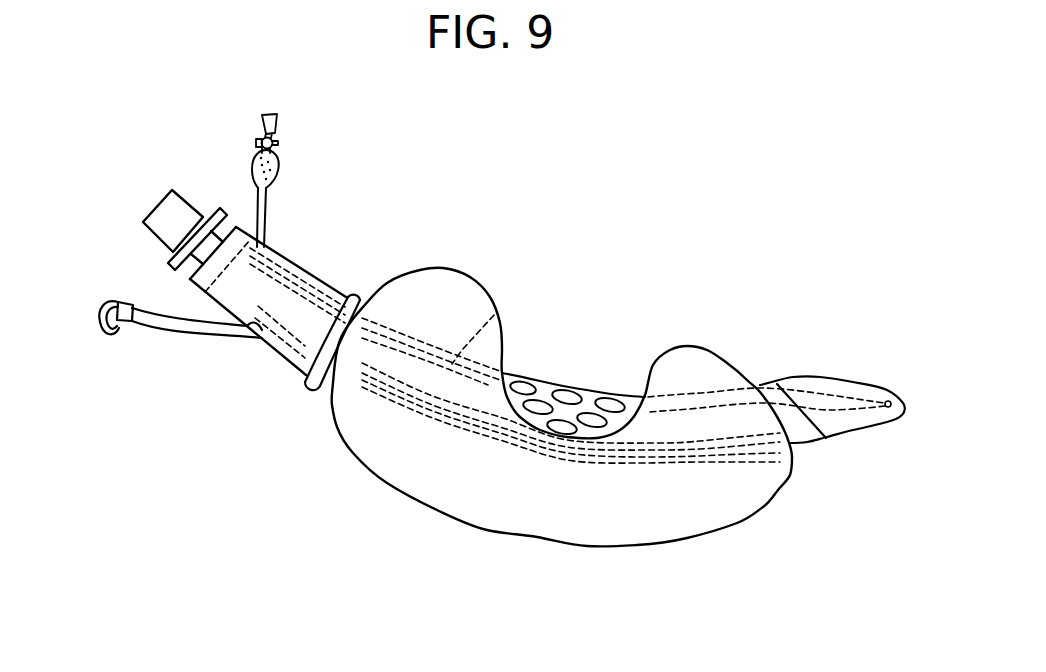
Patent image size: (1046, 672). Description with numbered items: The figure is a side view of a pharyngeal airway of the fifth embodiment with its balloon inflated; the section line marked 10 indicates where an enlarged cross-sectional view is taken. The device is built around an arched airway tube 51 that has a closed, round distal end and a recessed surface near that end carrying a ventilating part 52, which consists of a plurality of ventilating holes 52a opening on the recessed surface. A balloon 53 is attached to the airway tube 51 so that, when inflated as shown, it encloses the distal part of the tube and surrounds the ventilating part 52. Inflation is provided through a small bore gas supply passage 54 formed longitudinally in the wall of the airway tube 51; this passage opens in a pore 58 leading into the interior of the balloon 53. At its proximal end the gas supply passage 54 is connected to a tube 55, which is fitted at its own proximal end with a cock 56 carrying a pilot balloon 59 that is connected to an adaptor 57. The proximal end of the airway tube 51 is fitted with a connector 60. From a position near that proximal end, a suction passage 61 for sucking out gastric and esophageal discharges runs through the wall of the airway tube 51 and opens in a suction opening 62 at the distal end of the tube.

The section line for FIG. 10 is at (670, 343).
The arched airway tube 51 is at (338, 297).
The ventilating part 52 is at (588, 393).
The ventilating holes 52a is at (521, 381).
The balloon 53 is at (496, 517).
The gas supply passage 54 is at (307, 277).
The tube 55 is at (266, 234).
The cock 56 is at (283, 143).
The adaptor 57 is at (279, 121).
The pore 58 is at (494, 314).
The pilot balloon 59 is at (277, 176).
The connector 60 is at (197, 212).
The suction passage 61 is at (277, 353).
The suction opening 62 is at (890, 401).